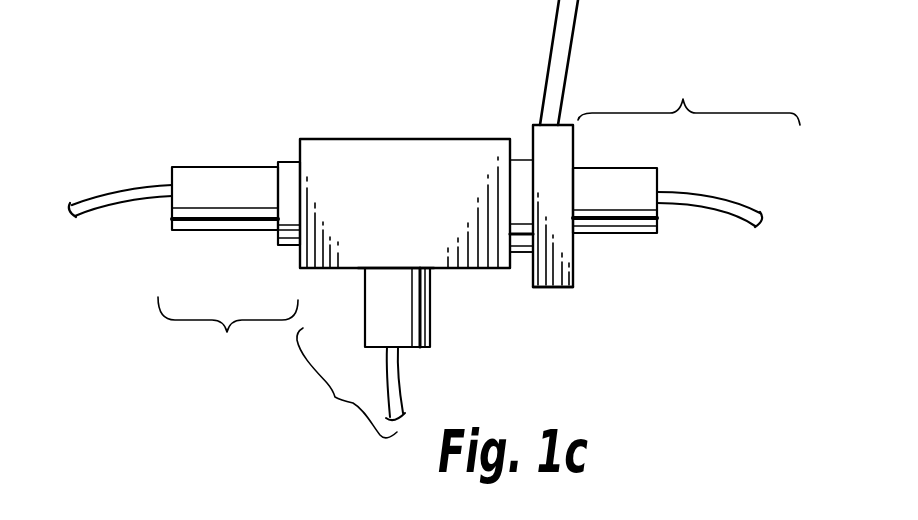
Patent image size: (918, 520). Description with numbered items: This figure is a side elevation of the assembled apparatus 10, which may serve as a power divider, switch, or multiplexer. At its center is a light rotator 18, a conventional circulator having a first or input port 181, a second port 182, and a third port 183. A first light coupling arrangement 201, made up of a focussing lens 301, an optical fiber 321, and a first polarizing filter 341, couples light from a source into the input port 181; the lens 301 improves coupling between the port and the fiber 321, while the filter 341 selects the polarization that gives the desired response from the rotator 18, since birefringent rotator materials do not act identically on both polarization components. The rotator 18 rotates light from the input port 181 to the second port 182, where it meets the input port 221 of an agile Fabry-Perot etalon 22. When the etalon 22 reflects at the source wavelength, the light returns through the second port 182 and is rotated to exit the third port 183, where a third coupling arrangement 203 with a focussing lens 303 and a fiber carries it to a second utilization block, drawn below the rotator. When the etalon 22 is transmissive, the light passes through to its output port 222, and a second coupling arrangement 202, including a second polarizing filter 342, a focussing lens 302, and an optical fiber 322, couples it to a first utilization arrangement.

The apparatus 10 is at (689, 387).
The light rotator 18 is at (378, 139).
The first port 181 is at (298, 244).
The second port 182 is at (507, 160).
The third port 183 is at (363, 269).
The first light coupling arrangement 201 is at (227, 332).
The second coupling arrangement 202 is at (683, 99).
The third coupling arrangement 203 is at (335, 397).
The Fabry-Perot etalon 22 is at (566, 290).
The etalon input port 221 is at (528, 250).
The etalon output port 222 is at (580, 236).
The focussing lens 301 is at (204, 167).
The focussing lens 302 is at (645, 168).
The focussing lens 303 is at (430, 302).
The optical fiber 321 is at (100, 203).
The optical fiber 322 is at (738, 200).
The first polarizing filter 341 is at (290, 161).
The second polarizing filter 342 is at (530, 162).